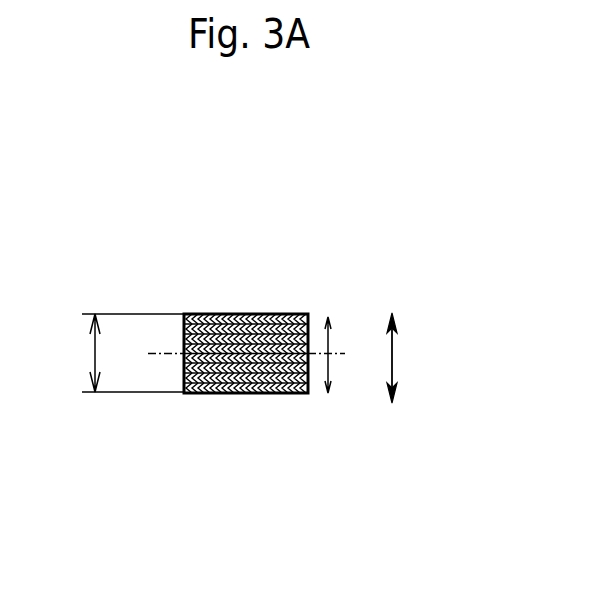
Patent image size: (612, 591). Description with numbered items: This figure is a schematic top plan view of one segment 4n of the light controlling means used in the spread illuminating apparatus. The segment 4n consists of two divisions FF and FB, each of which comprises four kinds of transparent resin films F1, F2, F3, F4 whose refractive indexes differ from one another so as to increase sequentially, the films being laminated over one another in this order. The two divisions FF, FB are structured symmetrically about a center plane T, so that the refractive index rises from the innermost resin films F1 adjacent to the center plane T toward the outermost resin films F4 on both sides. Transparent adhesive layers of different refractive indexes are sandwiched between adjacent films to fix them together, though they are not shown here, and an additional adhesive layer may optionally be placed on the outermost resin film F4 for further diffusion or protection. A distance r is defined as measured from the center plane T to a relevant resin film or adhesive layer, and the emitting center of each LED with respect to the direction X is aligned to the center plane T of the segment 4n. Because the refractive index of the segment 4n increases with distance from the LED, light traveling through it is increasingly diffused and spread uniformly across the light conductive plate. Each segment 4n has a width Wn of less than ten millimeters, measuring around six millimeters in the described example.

The segment 4n is at (314, 336).
The division FF is at (370, 253).
The division FB is at (372, 453).
The transparent resin film F1 is at (293, 347).
The transparent resin film F2 is at (263, 340).
The transparent resin film F3 is at (225, 330).
The transparent resin film F4 is at (201, 326).
The width Wn is at (113, 353).
The center plane T is at (238, 354).
The distance r is at (337, 355).
The direction X is at (403, 358).